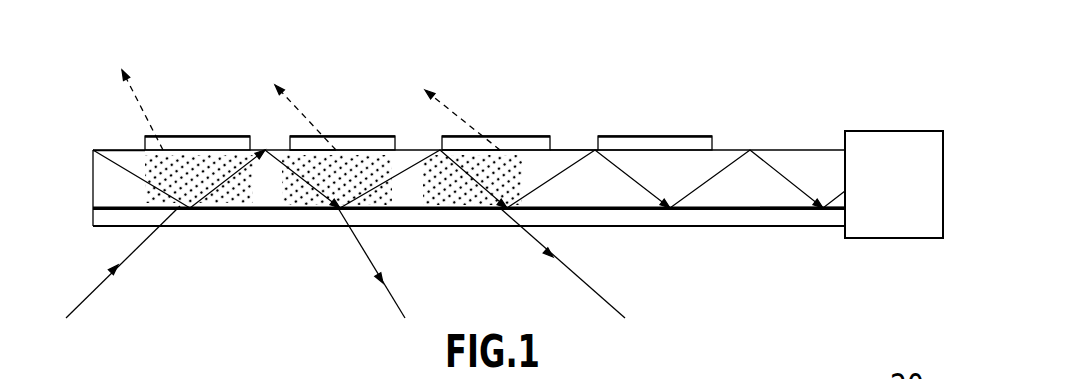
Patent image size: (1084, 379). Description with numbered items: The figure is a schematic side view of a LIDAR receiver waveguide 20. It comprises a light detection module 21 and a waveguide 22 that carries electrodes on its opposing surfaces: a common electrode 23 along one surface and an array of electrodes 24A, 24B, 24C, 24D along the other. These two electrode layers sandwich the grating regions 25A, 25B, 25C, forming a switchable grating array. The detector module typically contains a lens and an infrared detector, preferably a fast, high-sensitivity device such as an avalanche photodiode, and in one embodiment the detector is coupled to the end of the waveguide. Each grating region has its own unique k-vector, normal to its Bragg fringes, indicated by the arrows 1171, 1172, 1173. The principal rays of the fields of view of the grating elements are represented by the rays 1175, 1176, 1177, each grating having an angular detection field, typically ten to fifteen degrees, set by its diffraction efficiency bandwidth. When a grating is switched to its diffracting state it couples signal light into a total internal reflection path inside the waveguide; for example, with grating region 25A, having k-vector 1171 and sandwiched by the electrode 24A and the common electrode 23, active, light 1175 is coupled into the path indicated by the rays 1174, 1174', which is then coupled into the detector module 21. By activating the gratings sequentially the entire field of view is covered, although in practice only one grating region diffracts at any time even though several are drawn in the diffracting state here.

The LIDAR receiver waveguide 20 is at (504, 161).
The light detection module 21 is at (903, 239).
The waveguide 22 is at (776, 148).
The common electrode 23 is at (643, 222).
The electrode 24A is at (187, 138).
The electrode 24B is at (338, 137).
The electrode 24C is at (493, 138).
The electrode 24D is at (620, 137).
The grating region 25A is at (303, 118).
The grating region 25B is at (442, 105).
The grating region 25C is at (553, 148).
The k-vector 1171 is at (133, 78).
The k-vector 1172 is at (287, 95).
The k-vector 1173 is at (402, 151).
The ray 1174 is at (158, 110).
The ray 1174' is at (776, 237).
The principal ray 1175 is at (97, 305).
The principal ray 1176 is at (367, 255).
The principal ray 1177 is at (540, 257).